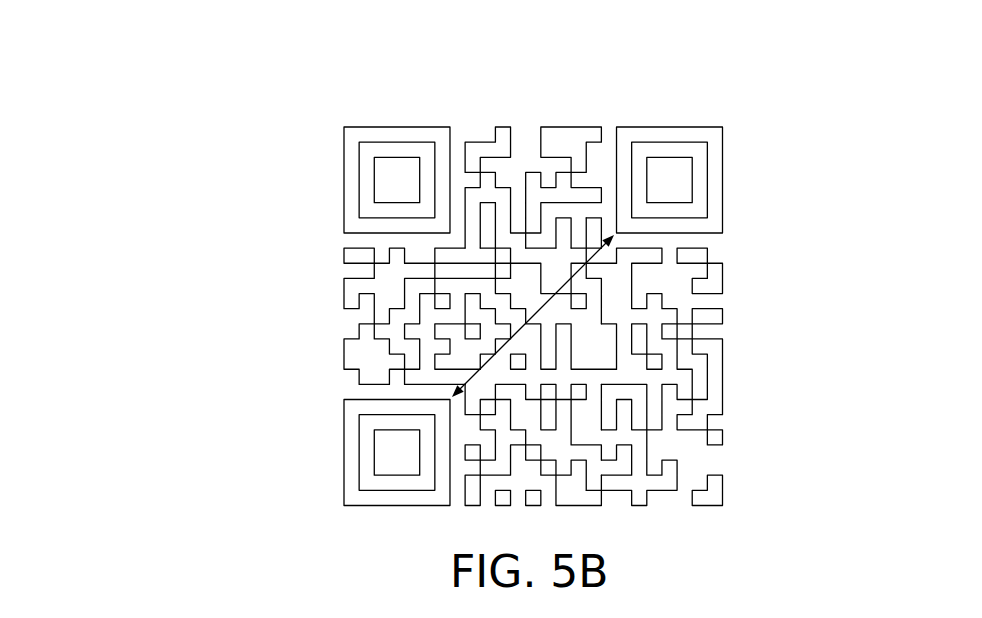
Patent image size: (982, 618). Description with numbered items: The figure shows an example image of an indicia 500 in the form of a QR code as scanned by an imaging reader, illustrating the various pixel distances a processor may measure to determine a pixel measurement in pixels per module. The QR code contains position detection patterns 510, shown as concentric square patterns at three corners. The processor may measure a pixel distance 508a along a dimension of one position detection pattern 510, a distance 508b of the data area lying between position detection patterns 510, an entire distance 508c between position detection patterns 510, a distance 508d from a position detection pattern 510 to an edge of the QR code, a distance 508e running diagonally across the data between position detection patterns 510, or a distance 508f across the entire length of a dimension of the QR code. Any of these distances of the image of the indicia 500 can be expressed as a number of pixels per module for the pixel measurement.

The indicia 500 is at (148, 135).
The pixel distance along a dimension of a position detection pattern 508a is at (330, 127).
The distance of a data area between position detection patterns 508b is at (328, 248).
The entire distance between position detection patterns 508c is at (617, 115).
The distance from a position detection pattern to an edge of the QR code 508d is at (737, 247).
The distance diagonally across data between position detection patterns 508e is at (526, 324).
The distance across the entire length of a dimension of the QR code 508f is at (215, 127).
The position detection pattern 510 is at (398, 127).